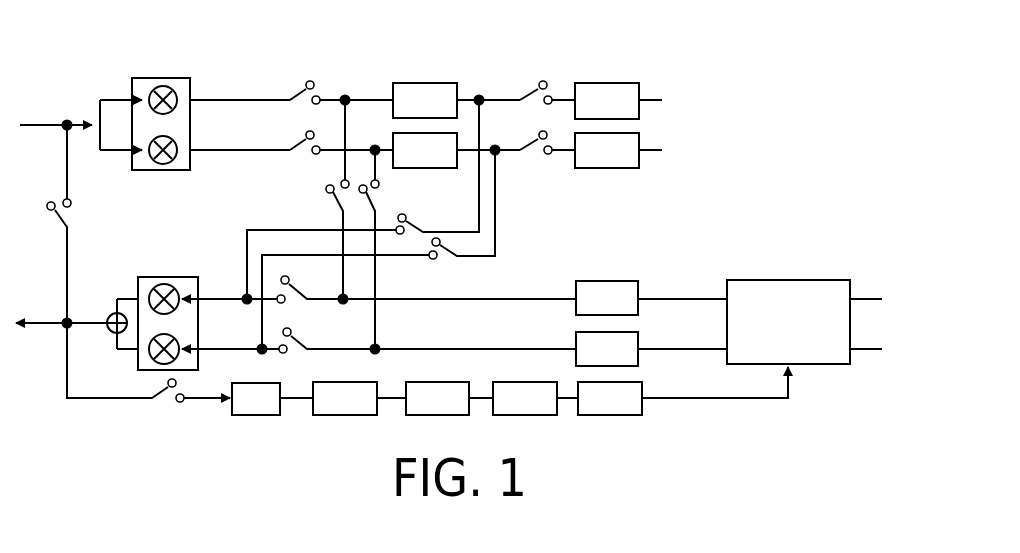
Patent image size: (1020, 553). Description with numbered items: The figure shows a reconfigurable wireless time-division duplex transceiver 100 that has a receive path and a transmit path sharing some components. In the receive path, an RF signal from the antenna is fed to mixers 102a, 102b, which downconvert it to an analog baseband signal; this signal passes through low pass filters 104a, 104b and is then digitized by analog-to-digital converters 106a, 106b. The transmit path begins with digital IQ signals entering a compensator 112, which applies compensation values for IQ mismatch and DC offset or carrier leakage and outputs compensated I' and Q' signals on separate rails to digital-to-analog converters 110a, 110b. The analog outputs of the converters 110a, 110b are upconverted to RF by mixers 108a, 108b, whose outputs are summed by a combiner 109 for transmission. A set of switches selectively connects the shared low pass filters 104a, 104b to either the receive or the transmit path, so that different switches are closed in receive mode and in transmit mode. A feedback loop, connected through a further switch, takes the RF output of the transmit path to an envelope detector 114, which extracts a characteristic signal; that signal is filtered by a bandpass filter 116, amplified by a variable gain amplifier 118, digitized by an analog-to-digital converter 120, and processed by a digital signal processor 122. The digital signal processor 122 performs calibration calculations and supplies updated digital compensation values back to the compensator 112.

The transceiver 100 is at (333, 27).
The mixer 102a is at (160, 87).
The mixer 102b is at (160, 164).
The low pass filter 104a is at (415, 83).
The low pass filter 104b is at (410, 168).
The analog-to-digital converter 106a is at (607, 83).
The analog-to-digital converter 106b is at (607, 168).
The mixer 108a is at (164, 284).
The mixer 108b is at (154, 362).
The combiner 109 is at (106, 315).
The digital-to-analog converter 110a is at (592, 281).
The digital-to-analog converter 110b is at (635, 366).
The compensator 112 is at (788, 322).
The envelope detector 114 is at (256, 410).
The bandpass filter 116 is at (345, 409).
The variable gain amplifier 118 is at (437, 409).
The analog-to-digital converter 120 is at (525, 409).
The digital signal processor 122 is at (610, 409).